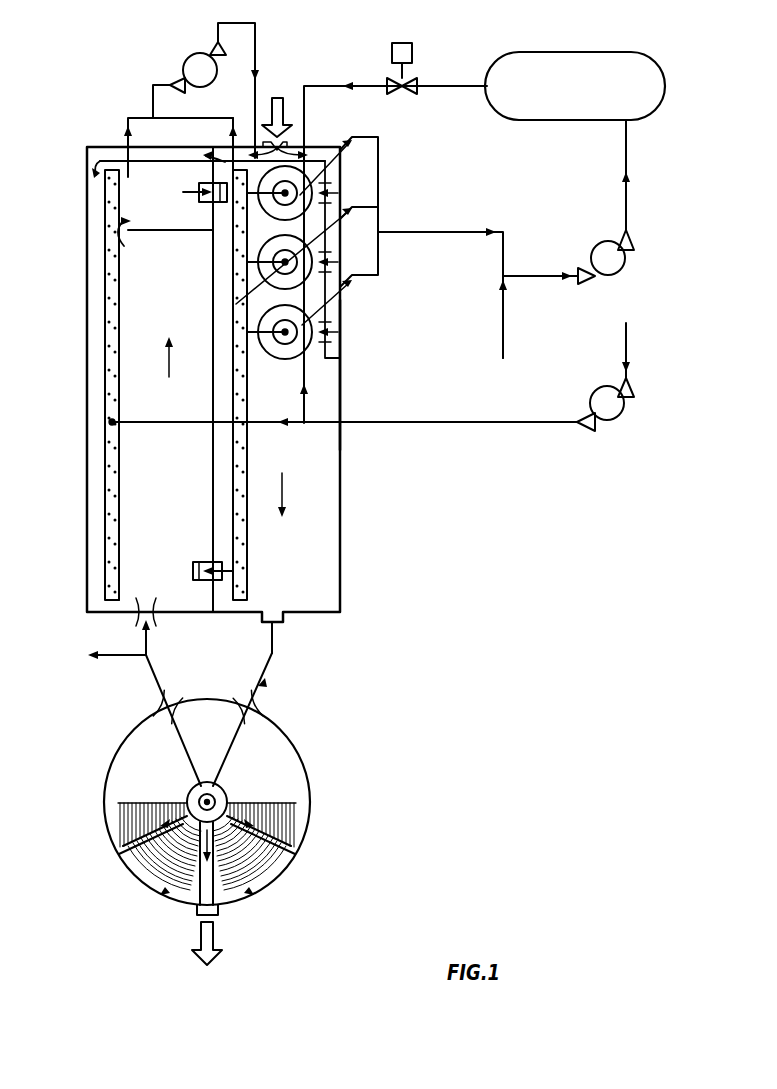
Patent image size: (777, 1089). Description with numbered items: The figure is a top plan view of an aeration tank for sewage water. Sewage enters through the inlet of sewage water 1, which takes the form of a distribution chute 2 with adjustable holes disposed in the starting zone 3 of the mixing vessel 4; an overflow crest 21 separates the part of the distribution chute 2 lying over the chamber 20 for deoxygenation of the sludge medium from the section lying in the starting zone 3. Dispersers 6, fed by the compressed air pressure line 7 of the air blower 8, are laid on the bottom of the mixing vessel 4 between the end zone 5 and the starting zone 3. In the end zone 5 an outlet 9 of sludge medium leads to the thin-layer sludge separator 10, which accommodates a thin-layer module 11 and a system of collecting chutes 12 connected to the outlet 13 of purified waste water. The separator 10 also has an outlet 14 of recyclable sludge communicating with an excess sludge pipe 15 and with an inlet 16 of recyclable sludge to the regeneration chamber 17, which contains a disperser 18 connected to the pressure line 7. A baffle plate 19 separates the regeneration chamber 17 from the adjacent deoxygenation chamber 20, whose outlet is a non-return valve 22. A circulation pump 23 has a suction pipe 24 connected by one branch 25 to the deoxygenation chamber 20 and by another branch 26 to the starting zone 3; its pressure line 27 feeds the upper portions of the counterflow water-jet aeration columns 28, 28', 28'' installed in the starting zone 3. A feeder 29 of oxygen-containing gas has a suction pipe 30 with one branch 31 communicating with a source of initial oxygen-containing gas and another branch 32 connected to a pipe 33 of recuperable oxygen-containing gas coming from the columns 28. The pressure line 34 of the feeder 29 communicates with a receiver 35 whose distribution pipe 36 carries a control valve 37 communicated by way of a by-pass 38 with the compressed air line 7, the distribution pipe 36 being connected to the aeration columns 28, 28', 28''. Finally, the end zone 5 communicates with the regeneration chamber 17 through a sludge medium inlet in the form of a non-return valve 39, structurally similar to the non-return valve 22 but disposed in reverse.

The inlet of sewage water 1 is at (281, 99).
The distribution chute 2 is at (158, 158).
The starting zone 3 is at (338, 212).
The mixing vessel 4 is at (341, 378).
The end zone 5 is at (318, 569).
The dispersers 6 is at (248, 450).
The compressed air pressure line 7 is at (508, 424).
The air blower 8 is at (600, 421).
The outlet of sludge medium 9 is at (283, 622).
The thin-layer sludge separator 10 is at (288, 738).
The thin-layer module 11 is at (292, 818).
The system of collecting chutes 12 is at (125, 845).
The outlet of purified waste water 13 is at (220, 910).
The outlet of recyclable sludge 14 is at (162, 709).
The excess sludge pipe 15 is at (100, 657).
The inlet of recyclable sludge 16 is at (156, 620).
The regeneration chamber 17 is at (120, 536).
The disperser 18 is at (105, 384).
The baffle plate 19 is at (178, 232).
The chamber for deoxygenation of the sludge medium 20 is at (118, 188).
The overflow crest 21 is at (211, 152).
The non-return valve 22 is at (200, 198).
The circulation pump 23 is at (206, 56).
The suction pipe 24 is at (153, 98).
The branch 25 is at (128, 130).
The branch 26 is at (236, 117).
The pressure line 27 is at (256, 25).
The water-jet aeration column 28 is at (279, 201).
The water-jet aeration column 28' is at (212, 385).
The water-jet aeration column 28'' is at (279, 351).
The feeder of oxygen-containing gas 29 is at (620, 272).
The suction pipe 30 is at (539, 278).
The branch 31 is at (504, 352).
The branch 32 is at (505, 242).
The pipe of recuperable oxygen-containing gas 33 is at (378, 196).
The pressure line 34 is at (626, 146).
The receiver 35 is at (533, 62).
The distribution pipe 36 is at (316, 86).
The control valve 37 is at (412, 48).
The by-pass 38 is at (306, 410).
The non-return valve 39 is at (193, 571).